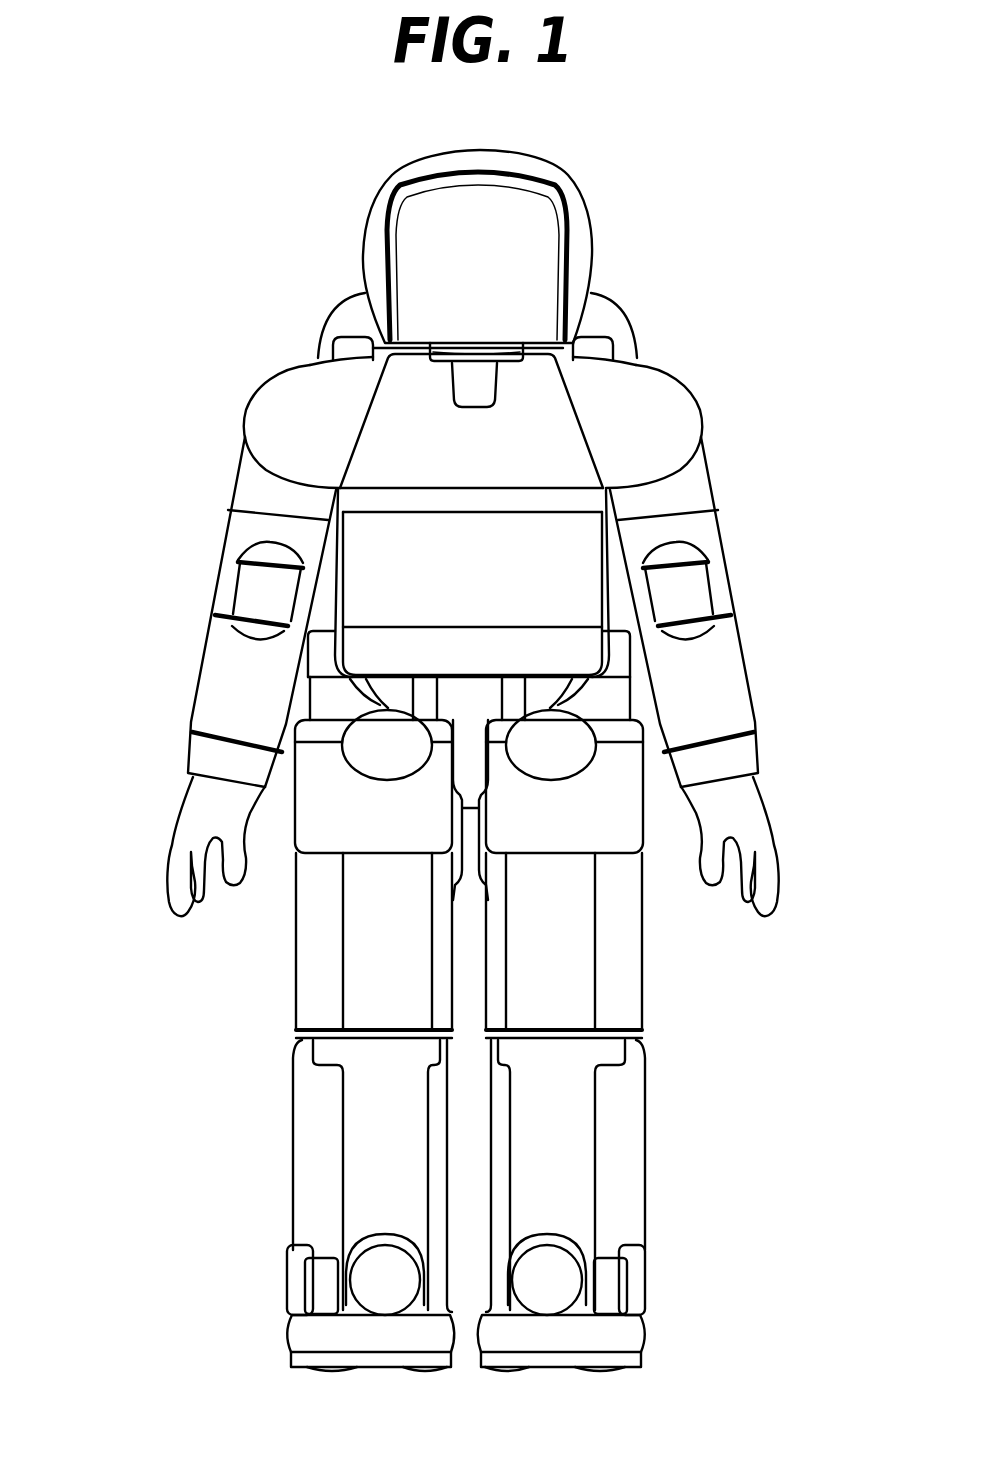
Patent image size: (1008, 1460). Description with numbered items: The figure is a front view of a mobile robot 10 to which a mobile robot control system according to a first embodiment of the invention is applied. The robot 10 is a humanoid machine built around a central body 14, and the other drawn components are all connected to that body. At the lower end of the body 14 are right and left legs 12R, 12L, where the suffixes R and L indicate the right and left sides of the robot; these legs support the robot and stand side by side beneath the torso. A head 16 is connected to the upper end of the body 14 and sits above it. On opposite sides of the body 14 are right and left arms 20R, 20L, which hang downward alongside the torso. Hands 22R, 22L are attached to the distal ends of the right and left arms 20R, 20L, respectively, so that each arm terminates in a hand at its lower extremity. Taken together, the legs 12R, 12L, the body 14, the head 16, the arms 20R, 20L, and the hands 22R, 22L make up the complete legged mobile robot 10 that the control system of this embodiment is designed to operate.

The mobile robot 10 is at (659, 290).
The right leg 12R is at (224, 1048).
The left leg 12L is at (691, 1039).
The body 14 is at (580, 605).
The head 16 is at (533, 170).
The right arm 20R is at (186, 478).
The left arm 20L is at (741, 459).
The right hand 22R is at (190, 832).
The left hand 22L is at (747, 812).